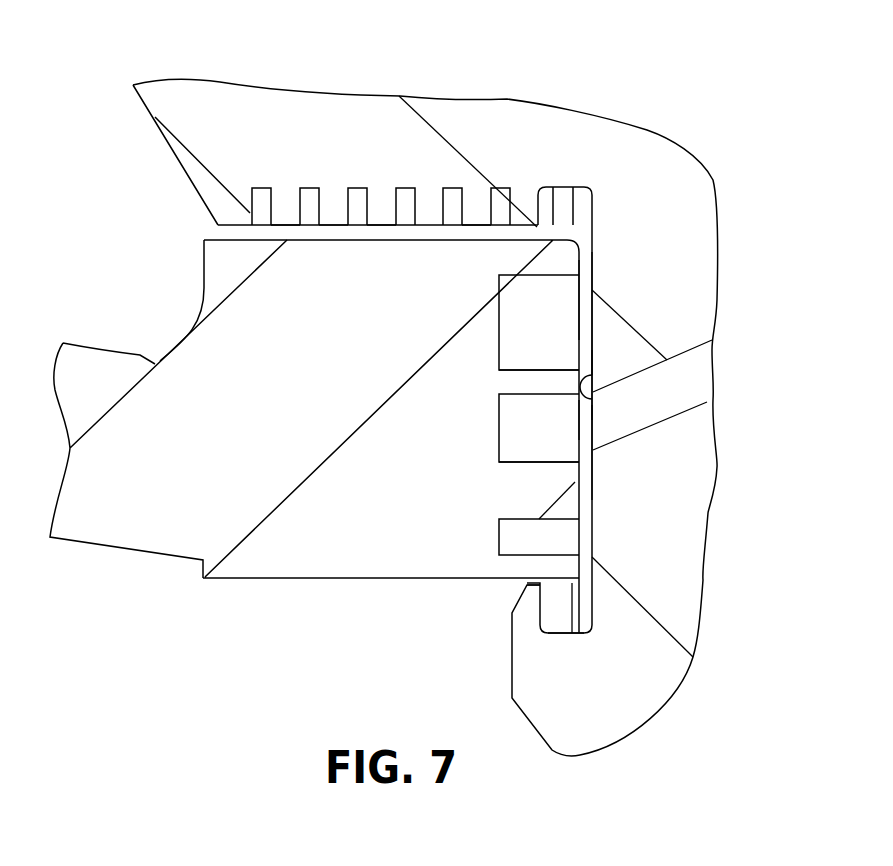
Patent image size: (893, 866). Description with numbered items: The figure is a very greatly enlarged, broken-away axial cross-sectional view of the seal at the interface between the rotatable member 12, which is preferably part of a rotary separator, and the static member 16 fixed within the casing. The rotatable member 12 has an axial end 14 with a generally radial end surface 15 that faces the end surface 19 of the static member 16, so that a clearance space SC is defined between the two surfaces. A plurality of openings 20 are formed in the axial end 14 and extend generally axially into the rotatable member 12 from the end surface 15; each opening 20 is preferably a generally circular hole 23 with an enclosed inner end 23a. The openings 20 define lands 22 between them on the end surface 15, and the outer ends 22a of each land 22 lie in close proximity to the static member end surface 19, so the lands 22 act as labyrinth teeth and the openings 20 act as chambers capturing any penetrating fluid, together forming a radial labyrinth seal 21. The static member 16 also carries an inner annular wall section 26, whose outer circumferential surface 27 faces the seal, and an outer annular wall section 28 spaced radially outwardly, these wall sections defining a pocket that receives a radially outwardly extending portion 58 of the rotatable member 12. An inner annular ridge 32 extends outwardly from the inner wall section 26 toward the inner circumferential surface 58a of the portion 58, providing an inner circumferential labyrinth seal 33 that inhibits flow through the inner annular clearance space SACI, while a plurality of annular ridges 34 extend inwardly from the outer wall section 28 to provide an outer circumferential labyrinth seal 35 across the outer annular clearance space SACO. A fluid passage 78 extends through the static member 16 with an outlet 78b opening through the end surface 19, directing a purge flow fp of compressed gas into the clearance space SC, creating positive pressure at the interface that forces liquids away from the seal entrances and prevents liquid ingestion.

The rotatable member 12 is at (85, 300).
The axial end 14 is at (365, 487).
The radial end surface 15 is at (578, 292).
The static member 16 is at (570, 120).
The end surface 19 is at (590, 422).
The openings 20 is at (517, 322).
The radial labyrinth seal 21 is at (593, 414).
The lands 22 is at (558, 258).
The outer ends of lands 22a is at (585, 255).
The circular hole 23 is at (540, 368).
The enclosed inner end 23a is at (590, 367).
The inner annular wall section 26 is at (525, 644).
The outer circumferential surface 27 is at (557, 631).
The outer annular wall section 28 is at (318, 140).
The inner annular ridge 32 is at (540, 600).
The inner circumferential labyrinth seal 33 is at (523, 577).
The outer annular ridges 34 is at (284, 215).
The outer circumferential labyrinth seal 35 is at (357, 233).
The rotatable member portion 58 is at (297, 450).
The inner circumferential surface 58a is at (328, 238).
The fluid passage 78 is at (710, 391).
The passage outlet 78b is at (593, 378).
The purge flow fp is at (630, 401).
The clearance space SC is at (500, 338).
The outer annular clearance space SACO is at (427, 240).
The inner annular clearance space SACI is at (530, 584).